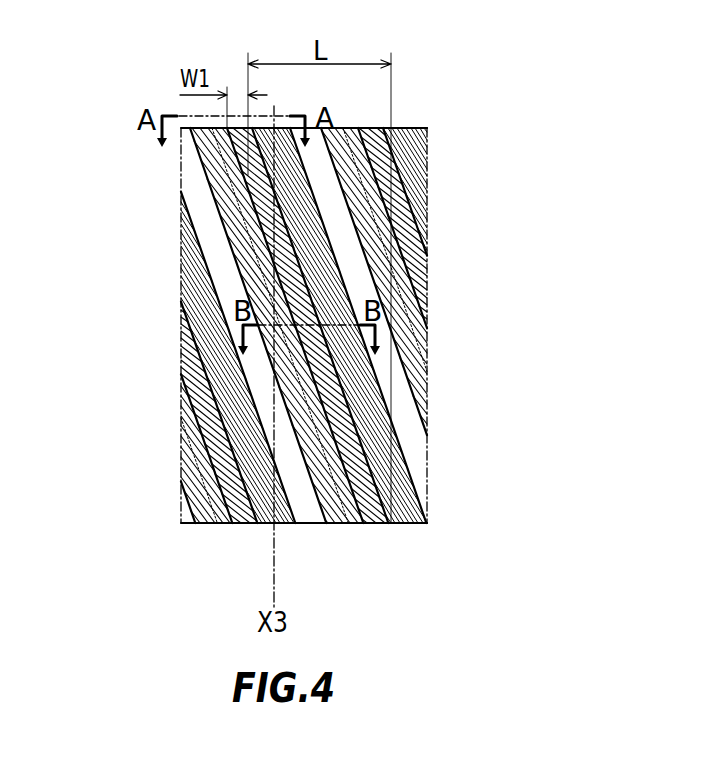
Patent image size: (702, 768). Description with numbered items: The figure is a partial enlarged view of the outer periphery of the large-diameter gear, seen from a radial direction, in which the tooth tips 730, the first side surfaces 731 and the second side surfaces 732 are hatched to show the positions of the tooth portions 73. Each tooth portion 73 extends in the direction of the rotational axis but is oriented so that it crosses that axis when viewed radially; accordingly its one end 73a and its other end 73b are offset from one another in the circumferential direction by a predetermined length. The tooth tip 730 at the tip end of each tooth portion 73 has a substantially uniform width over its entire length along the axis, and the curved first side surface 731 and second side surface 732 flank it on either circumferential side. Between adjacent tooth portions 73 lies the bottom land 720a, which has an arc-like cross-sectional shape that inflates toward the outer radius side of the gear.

The tooth portion 73 is at (295, 369).
The one end of tooth portion 73a is at (241, 130).
The other end of tooth portion 73b is at (250, 524).
The tooth tip 730 is at (368, 524).
The first side surface 731 is at (430, 524).
The second side surface 732 is at (332, 524).
The bottom land 720a is at (425, 458).